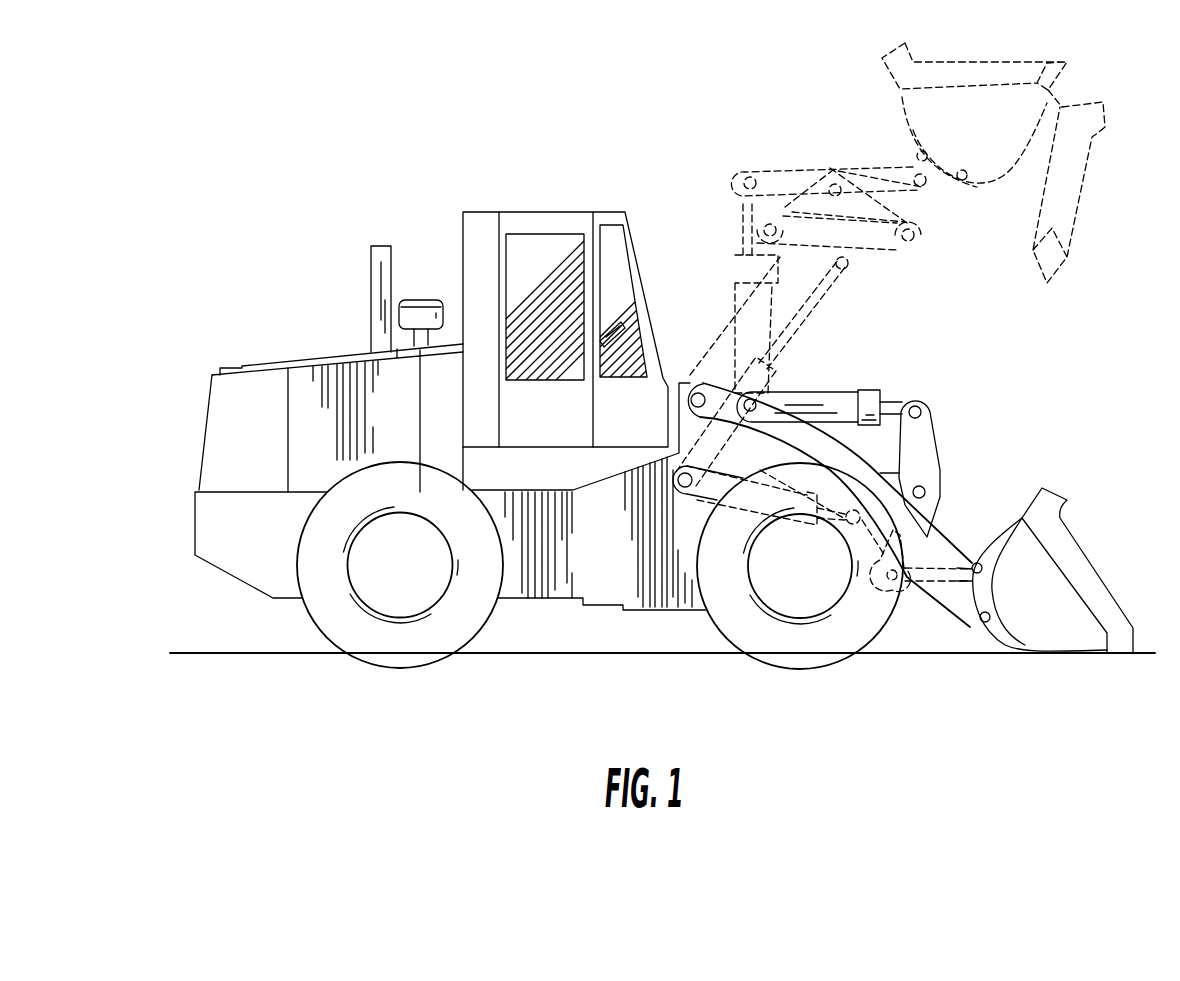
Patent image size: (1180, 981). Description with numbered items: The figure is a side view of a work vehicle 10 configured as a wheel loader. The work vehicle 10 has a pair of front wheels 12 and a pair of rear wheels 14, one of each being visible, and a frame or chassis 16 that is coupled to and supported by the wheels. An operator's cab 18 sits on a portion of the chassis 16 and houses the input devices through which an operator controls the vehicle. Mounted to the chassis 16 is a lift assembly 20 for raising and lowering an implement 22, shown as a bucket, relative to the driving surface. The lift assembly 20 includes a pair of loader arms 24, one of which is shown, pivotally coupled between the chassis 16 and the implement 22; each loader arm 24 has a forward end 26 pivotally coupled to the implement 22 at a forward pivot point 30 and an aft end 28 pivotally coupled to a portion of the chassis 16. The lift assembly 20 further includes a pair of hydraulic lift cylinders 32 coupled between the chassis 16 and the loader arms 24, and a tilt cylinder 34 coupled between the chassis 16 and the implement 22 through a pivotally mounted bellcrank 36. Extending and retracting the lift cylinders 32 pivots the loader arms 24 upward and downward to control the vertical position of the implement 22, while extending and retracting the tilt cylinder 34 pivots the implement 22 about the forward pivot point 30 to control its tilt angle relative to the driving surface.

The work vehicle 10 is at (328, 146).
The front wheels 12 is at (860, 623).
The rear wheels 14 is at (327, 607).
The frame or chassis 16 is at (520, 572).
The operator's cab 18 is at (622, 268).
The lift assembly 20 is at (955, 361).
The implement 22 is at (1100, 579).
The loader arms 24 is at (910, 547).
The forward end 26 is at (961, 602).
The aft end 28 is at (698, 383).
The forward pivot point 30 is at (988, 624).
The hydraulic lift cylinders 32 is at (705, 502).
The tilt cylinder 34 is at (815, 390).
The bellcrank 36 is at (927, 477).